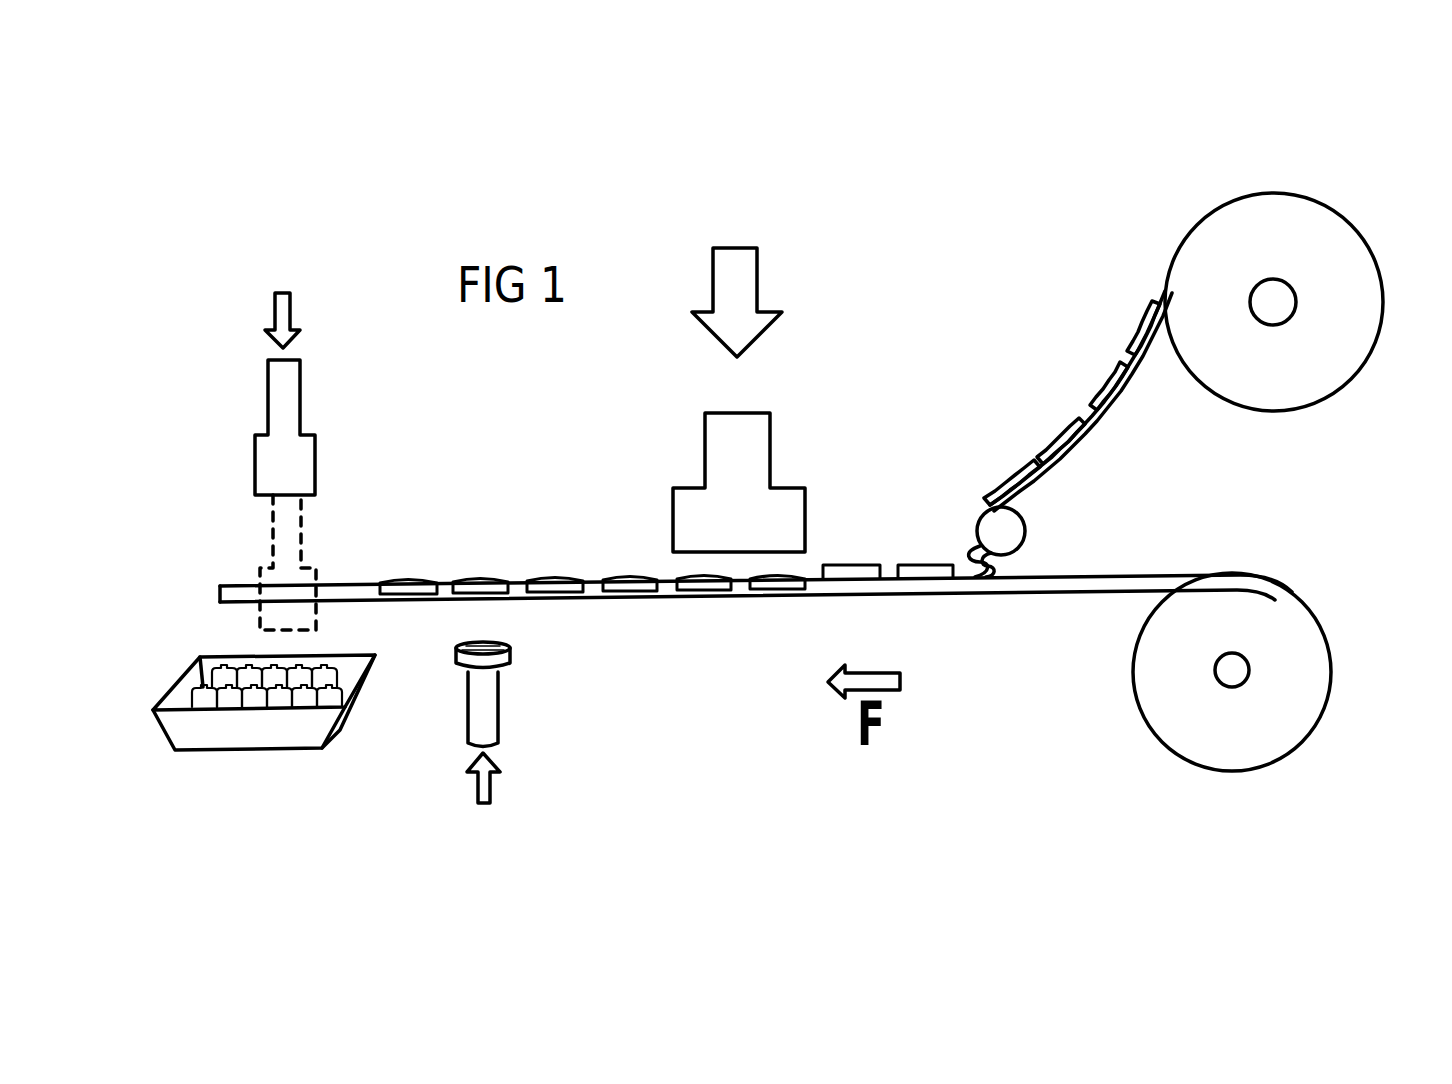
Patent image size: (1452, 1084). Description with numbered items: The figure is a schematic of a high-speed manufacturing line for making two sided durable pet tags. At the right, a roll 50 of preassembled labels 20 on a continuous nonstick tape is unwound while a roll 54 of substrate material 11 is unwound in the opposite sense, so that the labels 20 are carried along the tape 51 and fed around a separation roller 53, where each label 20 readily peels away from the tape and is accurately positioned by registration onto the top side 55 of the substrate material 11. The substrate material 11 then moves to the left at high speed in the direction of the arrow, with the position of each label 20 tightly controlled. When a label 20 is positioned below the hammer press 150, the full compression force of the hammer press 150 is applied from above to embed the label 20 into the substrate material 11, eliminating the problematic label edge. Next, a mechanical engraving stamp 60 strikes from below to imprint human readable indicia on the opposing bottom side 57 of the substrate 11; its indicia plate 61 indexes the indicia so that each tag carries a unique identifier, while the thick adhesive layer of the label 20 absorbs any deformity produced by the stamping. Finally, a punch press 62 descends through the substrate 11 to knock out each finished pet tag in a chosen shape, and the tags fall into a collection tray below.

The substrate material 11 is at (961, 594).
The label 20 is at (1112, 395).
The roll 50 is at (1322, 275).
The label web 51 is at (1107, 437).
The separation roller 53 is at (1016, 531).
The roll 54 is at (1258, 750).
The top side 55 is at (1060, 585).
The bottom side 57 is at (1012, 597).
The engraving stamp head 60 is at (500, 697).
The indicia plate 61 is at (510, 650).
The punch press 62 is at (290, 483).
The hammer press 150 is at (735, 512).